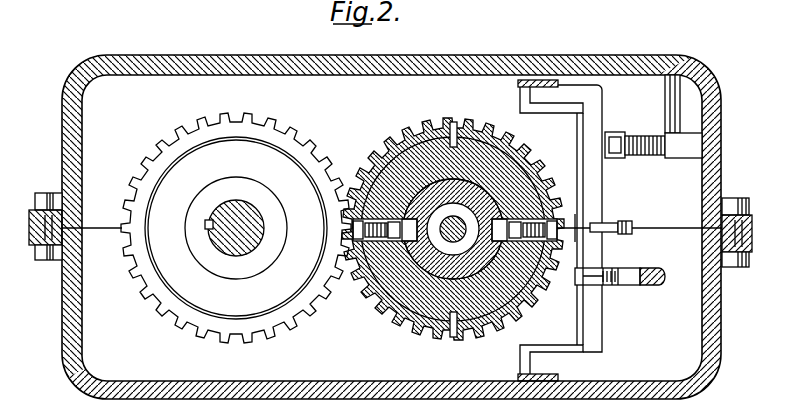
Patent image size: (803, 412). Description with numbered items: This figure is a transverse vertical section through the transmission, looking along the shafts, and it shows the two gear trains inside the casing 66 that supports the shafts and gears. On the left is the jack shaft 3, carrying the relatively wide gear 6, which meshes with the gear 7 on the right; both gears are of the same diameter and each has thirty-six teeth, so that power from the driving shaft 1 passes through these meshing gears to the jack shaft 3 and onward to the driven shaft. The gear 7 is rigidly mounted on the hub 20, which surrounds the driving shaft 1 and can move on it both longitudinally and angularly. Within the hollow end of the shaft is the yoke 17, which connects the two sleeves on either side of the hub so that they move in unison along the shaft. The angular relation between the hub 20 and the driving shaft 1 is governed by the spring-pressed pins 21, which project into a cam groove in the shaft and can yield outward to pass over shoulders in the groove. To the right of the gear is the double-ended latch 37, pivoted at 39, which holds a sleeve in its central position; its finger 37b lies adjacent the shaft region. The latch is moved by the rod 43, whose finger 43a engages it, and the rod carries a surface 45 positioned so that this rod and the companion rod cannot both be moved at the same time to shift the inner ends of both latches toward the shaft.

The casing 66 is at (612, 60).
The gear 6 is at (199, 118).
The jack shaft 3 is at (252, 201).
The driving shaft 1 is at (449, 212).
The hub 20 is at (369, 158).
The gear 7 is at (426, 121).
The yoke 17 is at (491, 190).
The pins 21 is at (366, 299).
The latch 37 is at (593, 193).
The finger 37b is at (620, 222).
The pivot 39 is at (522, 98).
The surface 45 is at (620, 268).
The finger 43a is at (599, 287).
The rod 43 is at (656, 287).